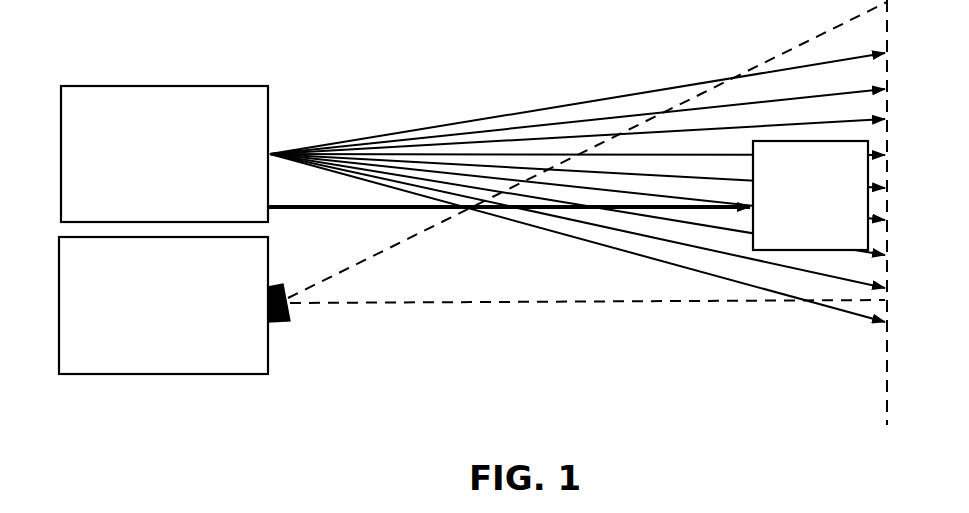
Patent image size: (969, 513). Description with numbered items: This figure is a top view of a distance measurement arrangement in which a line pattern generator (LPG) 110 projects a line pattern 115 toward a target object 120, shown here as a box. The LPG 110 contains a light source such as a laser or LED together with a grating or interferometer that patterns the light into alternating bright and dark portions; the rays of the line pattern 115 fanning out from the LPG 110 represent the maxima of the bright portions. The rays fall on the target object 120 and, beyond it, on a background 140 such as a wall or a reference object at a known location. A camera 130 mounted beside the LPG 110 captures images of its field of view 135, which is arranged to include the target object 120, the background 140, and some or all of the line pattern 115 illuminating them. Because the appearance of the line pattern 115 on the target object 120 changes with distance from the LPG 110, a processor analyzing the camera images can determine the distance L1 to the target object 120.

The line pattern generator (LPG) 110 is at (148, 196).
The line pattern 115 is at (600, 78).
The target object 120 is at (793, 238).
The camera 130 is at (146, 333).
The field of view 135 is at (367, 312).
The background 140 is at (879, 370).
The distance L1 is at (509, 221).